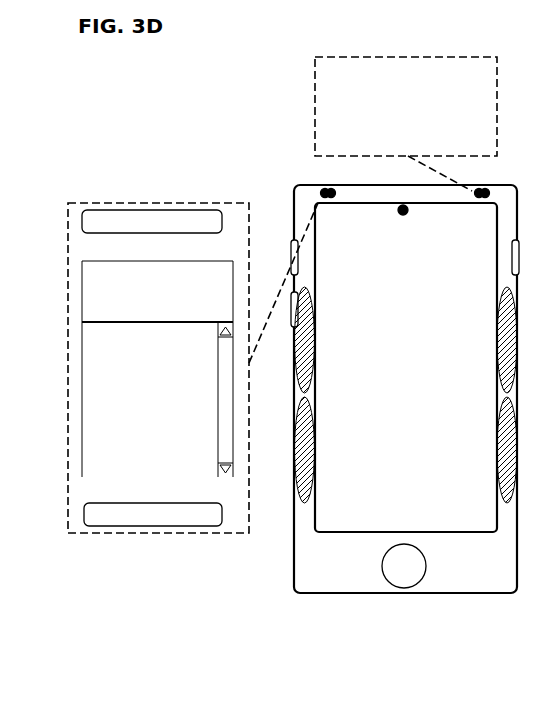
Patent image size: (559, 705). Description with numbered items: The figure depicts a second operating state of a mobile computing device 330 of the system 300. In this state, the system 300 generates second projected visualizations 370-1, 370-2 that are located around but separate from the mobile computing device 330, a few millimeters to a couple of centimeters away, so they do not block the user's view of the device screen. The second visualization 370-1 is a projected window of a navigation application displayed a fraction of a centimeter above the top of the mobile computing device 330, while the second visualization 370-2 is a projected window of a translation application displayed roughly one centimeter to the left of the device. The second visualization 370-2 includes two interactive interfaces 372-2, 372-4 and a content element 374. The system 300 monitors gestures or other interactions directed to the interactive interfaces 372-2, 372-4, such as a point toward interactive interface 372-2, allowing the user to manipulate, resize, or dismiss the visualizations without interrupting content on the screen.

The system 300 is at (52, 617).
The mobile computing device 330 is at (356, 617).
The second projected visualization 370-1 is at (298, 93).
The second projected visualization 370-2 is at (98, 156).
The interactive interface 372-2 is at (74, 228).
The content element 374 is at (74, 372).
The interactive interface 372-4 is at (76, 518).